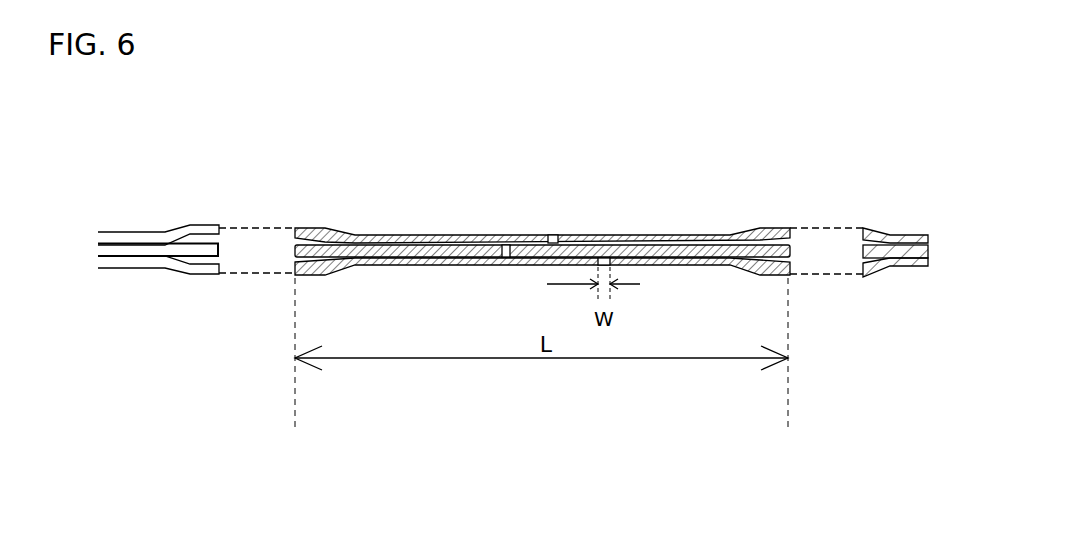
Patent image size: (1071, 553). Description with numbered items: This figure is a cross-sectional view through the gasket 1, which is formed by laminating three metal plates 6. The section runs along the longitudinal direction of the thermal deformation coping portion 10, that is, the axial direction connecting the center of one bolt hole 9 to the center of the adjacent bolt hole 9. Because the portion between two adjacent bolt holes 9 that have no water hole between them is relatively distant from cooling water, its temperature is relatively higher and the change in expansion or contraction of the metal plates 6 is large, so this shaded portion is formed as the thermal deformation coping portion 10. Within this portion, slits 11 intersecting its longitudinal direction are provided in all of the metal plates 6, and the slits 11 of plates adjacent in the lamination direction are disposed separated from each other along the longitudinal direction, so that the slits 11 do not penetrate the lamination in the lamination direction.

The gasket 1 is at (513, 195).
The metal plate 6 is at (400, 235).
The bolt hole 9 is at (258, 226).
The thermal deformation coping portion 10 is at (789, 223).
The slit 11 is at (505, 245).